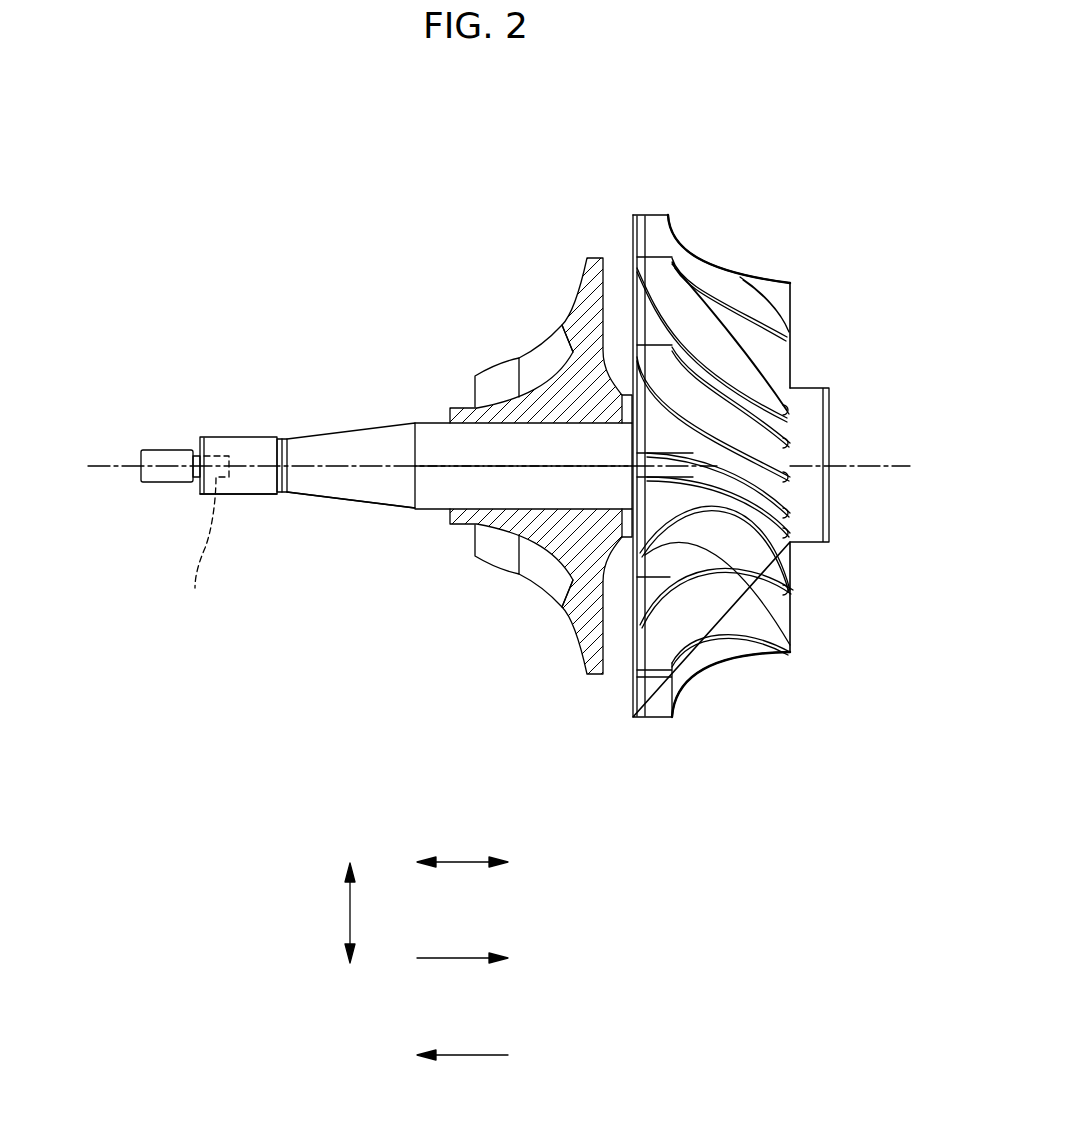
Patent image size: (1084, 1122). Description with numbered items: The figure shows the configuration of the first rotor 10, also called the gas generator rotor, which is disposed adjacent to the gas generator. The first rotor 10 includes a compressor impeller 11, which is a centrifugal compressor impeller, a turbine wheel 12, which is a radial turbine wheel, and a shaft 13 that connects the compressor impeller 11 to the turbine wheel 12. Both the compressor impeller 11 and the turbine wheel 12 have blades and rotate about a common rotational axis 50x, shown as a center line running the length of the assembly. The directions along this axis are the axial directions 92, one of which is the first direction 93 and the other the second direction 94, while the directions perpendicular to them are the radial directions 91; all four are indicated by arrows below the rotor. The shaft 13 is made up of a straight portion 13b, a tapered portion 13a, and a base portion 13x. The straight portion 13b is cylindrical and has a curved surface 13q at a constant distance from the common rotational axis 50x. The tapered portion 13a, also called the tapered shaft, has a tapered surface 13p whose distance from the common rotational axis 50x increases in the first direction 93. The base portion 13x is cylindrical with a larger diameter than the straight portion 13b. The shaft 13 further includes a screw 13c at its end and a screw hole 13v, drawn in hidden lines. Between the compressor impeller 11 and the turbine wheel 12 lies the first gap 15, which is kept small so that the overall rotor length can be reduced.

The first rotor 10 is at (226, 216).
The compressor impeller 11 is at (558, 390).
The turbine wheel 12 is at (695, 390).
The shaft 13 is at (460, 327).
The tapered portion 13a is at (353, 452).
The straight portion 13b is at (257, 452).
The screw 13c is at (165, 452).
The base portion 13x is at (436, 438).
The tapered surface 13p is at (340, 500).
The curved surface 13q is at (253, 495).
The screw hole 13v is at (205, 536).
The common rotational axis 50x is at (422, 467).
The first gap 15 is at (617, 328).
The radial directions 91 is at (349, 908).
The axial directions 92 is at (470, 861).
The first direction 93 is at (470, 957).
The second direction 94 is at (470, 1054).